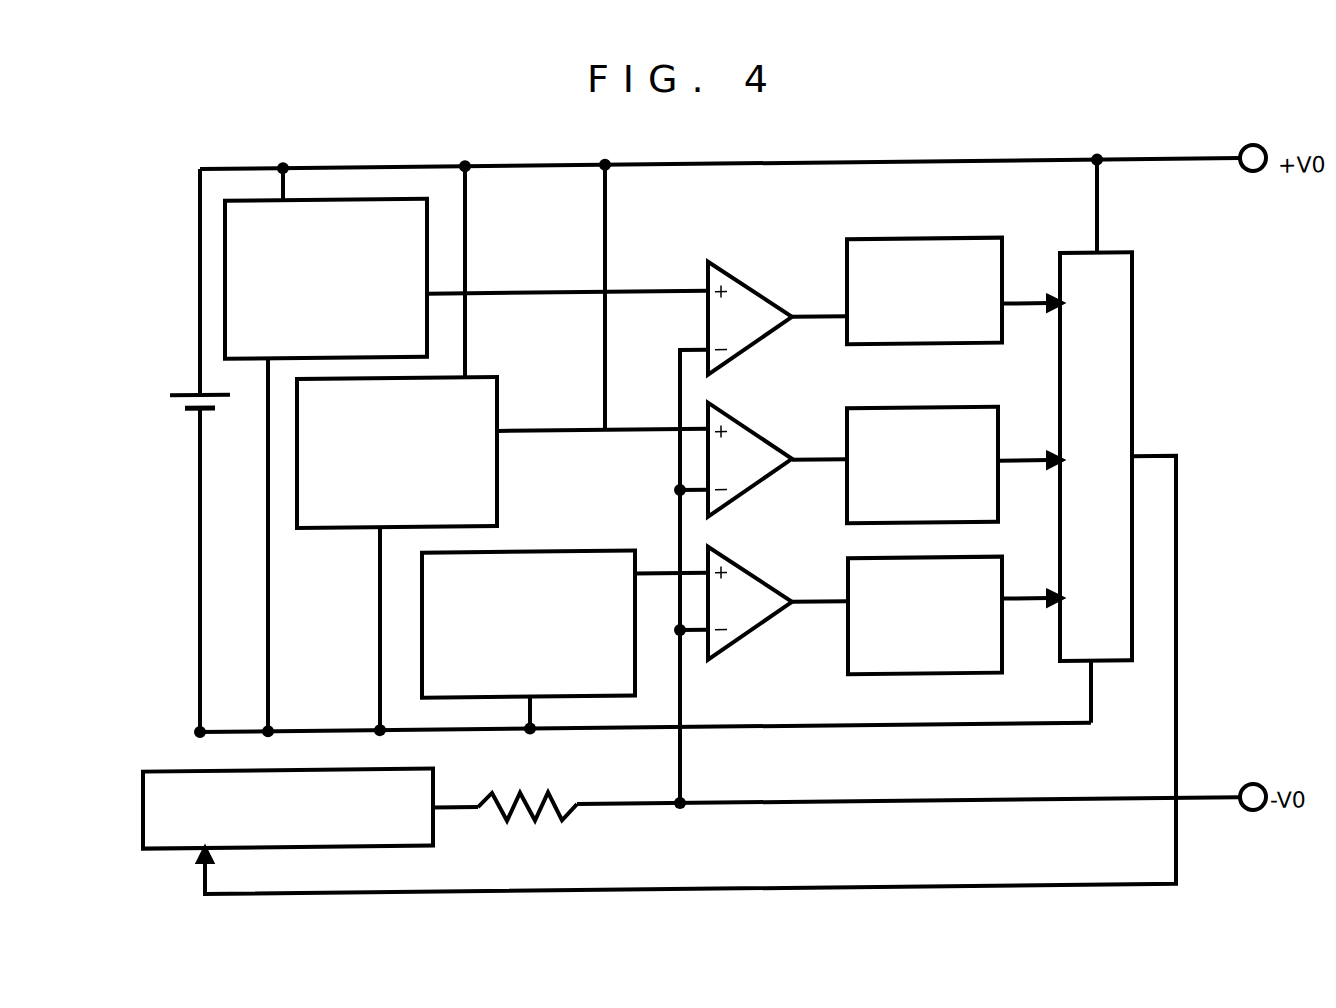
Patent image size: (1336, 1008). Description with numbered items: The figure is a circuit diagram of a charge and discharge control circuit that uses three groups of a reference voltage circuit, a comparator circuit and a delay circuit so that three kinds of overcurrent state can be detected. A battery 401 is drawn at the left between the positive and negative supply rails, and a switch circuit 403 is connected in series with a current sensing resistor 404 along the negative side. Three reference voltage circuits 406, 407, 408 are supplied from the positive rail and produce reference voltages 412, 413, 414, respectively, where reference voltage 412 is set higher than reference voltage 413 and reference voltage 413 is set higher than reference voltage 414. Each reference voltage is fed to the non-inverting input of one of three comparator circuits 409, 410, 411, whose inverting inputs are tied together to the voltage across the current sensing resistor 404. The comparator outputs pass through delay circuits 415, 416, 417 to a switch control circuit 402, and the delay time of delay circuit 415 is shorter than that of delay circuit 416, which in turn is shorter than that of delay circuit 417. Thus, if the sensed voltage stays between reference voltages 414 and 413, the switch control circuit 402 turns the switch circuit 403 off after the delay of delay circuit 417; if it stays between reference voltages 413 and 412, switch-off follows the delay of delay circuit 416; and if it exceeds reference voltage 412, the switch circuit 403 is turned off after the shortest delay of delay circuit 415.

The battery 401 is at (163, 388).
The switch control circuit 402 is at (1135, 312).
The switch circuit 403 is at (435, 825).
The current sensing resistor 404 is at (562, 819).
The reference voltage circuit 406 is at (355, 202).
The reference voltage circuit 407 is at (477, 375).
The reference voltage circuit 408 is at (542, 549).
The comparator 409 is at (748, 286).
The comparator 410 is at (760, 431).
The comparator 411 is at (745, 644).
The reference voltage 412 is at (567, 273).
The reference voltage 413 is at (602, 411).
The reference voltage 414 is at (665, 572).
The delay circuit 415 is at (897, 240).
The delay circuit 416 is at (895, 410).
The delay circuit 417 is at (900, 677).